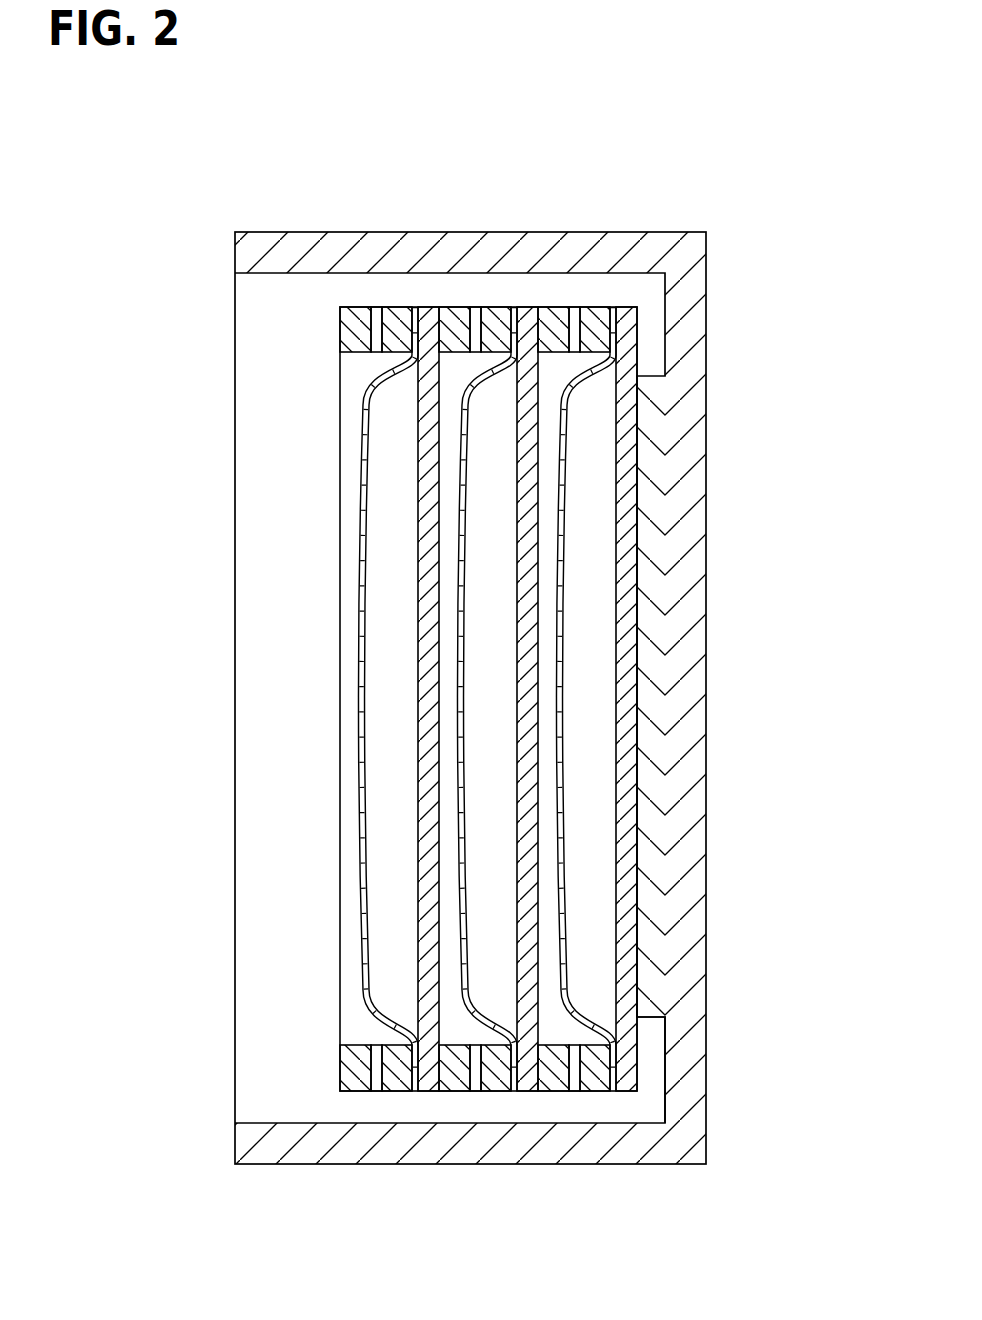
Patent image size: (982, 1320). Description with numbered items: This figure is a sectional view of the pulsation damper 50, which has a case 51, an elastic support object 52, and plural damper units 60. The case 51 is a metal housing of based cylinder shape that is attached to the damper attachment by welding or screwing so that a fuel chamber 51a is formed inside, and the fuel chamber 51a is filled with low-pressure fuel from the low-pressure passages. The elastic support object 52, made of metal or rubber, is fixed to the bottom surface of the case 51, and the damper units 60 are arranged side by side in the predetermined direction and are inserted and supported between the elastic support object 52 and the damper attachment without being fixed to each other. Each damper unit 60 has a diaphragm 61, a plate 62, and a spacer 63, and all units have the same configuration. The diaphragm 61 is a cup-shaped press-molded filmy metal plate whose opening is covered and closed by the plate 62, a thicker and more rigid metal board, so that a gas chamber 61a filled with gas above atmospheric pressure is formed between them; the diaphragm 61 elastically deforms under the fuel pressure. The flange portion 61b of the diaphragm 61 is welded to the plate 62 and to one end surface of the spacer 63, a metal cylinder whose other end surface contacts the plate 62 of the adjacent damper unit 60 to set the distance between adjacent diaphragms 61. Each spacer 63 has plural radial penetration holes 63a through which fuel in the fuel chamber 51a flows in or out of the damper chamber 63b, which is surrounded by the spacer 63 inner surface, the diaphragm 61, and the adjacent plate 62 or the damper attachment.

The pulsation damper 50 is at (694, 212).
The case 51 is at (707, 920).
The fuel chamber 51a is at (647, 327).
The elastic support object 52 is at (650, 1018).
The damper unit 60 is at (172, 400).
The diaphragm 61 is at (358, 455).
The gas chamber 61a is at (393, 429).
The flange portion 61b is at (411, 1076).
The plate 62 is at (427, 516).
The spacer 63 is at (497, 307).
The penetration hole 63a is at (374, 307).
The damper chamber 63b is at (352, 903).